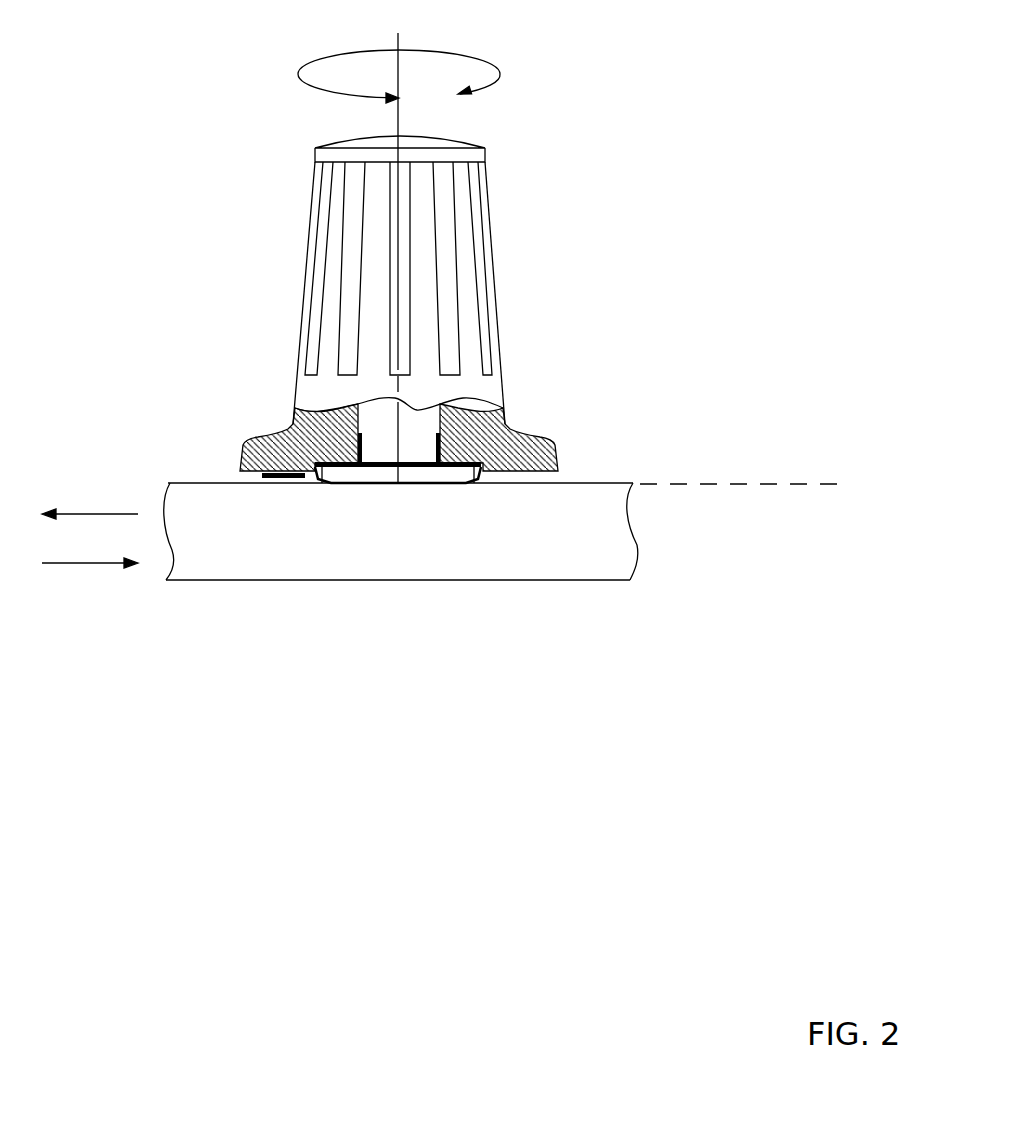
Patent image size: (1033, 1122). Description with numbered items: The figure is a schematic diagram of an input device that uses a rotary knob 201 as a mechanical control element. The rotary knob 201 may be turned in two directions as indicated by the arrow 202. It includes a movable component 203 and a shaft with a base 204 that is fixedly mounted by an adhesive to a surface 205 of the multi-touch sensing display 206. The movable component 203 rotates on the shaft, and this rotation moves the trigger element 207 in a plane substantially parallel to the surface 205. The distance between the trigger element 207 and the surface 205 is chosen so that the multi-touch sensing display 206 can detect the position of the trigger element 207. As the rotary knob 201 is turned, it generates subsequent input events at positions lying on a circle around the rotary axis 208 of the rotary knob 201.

The rotary knob 201 is at (220, 130).
The arrow 202 is at (500, 72).
The movable component 203 is at (494, 270).
The shaft with a base 204 is at (430, 477).
The surface 205 is at (686, 472).
The multi-touch sensing display 206 is at (400, 556).
The trigger element 207 is at (278, 487).
The rotary axis 208 is at (398, 38).